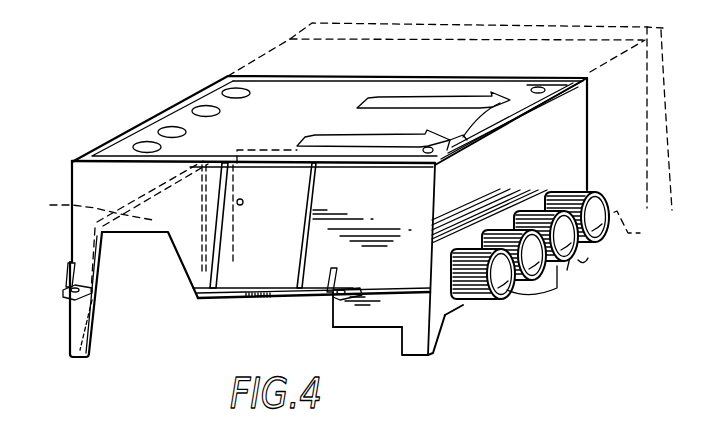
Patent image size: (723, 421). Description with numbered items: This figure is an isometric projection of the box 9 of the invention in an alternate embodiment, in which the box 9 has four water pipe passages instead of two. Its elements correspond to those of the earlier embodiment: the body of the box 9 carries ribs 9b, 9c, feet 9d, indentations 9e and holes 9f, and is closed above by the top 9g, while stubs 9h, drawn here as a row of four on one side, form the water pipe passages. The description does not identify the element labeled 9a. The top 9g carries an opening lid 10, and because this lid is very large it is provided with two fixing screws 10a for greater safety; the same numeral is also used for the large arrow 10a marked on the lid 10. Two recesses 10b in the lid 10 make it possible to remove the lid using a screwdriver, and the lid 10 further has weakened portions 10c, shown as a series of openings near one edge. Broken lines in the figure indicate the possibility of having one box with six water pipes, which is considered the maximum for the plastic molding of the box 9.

The box 9 is at (573, 142).
The housing bottom floor 9a is at (240, 300).
The rib 9b is at (223, 300).
The rib 9c is at (284, 290).
The feet 9d is at (75, 331).
The indentations 9e is at (490, 326).
The holes 9f is at (72, 302).
The top 9g is at (396, 78).
The stubs 9h is at (553, 275).
The opening lid 10 is at (180, 118).
The large arrow 10a is at (546, 92).
The recess 10b is at (470, 125).
The weakened portions 10c is at (222, 90).